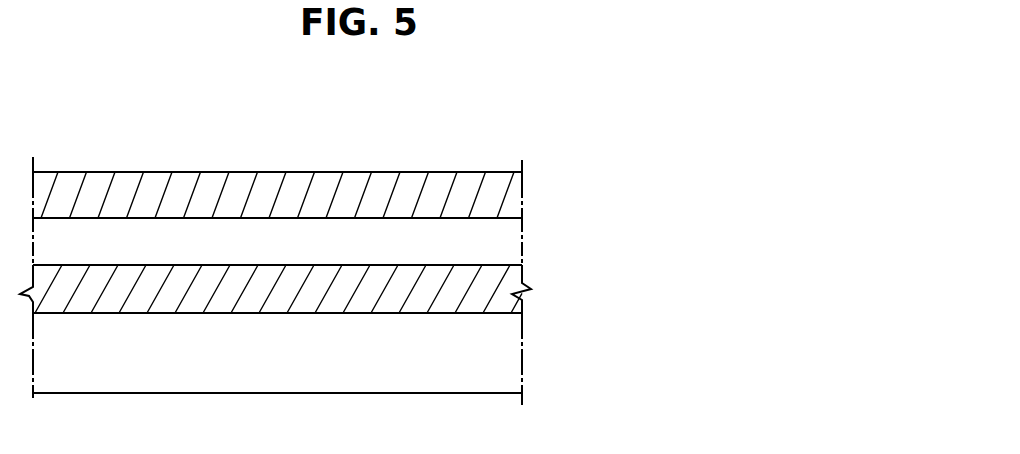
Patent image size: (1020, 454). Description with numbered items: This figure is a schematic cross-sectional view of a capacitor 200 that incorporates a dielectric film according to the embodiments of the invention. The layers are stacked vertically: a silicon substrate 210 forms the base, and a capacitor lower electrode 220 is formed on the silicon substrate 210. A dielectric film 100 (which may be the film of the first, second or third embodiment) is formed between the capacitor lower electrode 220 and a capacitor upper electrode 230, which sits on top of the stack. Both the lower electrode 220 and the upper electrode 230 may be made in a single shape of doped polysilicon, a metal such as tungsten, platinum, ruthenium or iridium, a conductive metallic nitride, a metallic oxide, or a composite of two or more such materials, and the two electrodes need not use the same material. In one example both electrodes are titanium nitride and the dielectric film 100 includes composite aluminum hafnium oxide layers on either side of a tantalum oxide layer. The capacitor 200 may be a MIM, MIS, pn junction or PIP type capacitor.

The capacitor 200 is at (503, 146).
The capacitor upper electrode 230 is at (506, 197).
The dielectric film 100 is at (522, 250).
The capacitor lower electrode 220 is at (517, 302).
The silicon substrate 210 is at (508, 358).